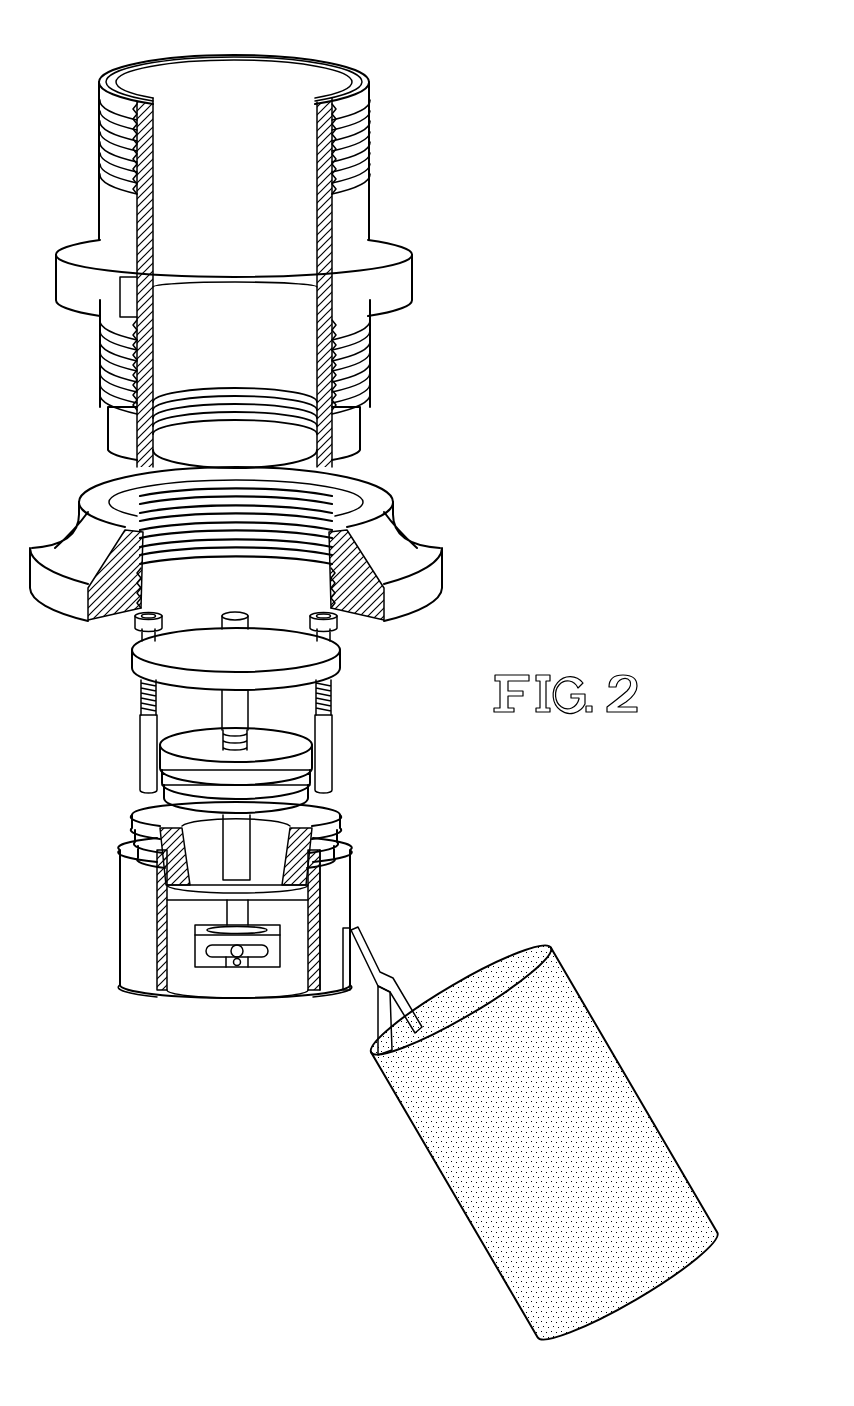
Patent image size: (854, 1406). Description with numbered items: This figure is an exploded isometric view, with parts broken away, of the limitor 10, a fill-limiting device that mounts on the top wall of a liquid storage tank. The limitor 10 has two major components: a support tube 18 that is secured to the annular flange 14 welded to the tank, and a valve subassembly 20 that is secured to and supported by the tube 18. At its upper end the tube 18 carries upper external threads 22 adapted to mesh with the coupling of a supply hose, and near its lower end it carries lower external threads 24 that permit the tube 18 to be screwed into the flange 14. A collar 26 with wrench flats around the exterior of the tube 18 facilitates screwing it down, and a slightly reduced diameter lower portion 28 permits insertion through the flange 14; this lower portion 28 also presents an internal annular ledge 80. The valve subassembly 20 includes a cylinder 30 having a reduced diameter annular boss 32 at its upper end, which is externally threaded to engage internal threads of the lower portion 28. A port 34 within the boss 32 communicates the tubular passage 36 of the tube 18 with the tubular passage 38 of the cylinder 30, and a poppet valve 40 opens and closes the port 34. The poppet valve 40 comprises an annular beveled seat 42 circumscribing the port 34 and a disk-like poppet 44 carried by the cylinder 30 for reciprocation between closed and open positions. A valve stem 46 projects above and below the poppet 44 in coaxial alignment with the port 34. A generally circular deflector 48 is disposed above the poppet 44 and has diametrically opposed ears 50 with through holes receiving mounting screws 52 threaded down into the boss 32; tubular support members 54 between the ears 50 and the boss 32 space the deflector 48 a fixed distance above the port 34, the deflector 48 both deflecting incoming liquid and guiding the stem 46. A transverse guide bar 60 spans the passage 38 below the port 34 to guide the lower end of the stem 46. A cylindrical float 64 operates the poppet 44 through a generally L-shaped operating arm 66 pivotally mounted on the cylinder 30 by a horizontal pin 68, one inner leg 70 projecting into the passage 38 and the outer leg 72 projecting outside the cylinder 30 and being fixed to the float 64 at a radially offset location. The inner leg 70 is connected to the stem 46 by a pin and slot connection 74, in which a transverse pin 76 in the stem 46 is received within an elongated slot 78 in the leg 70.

The limitor 10 is at (487, 338).
The annular flange 14 is at (430, 578).
The support tube 18 is at (274, 236).
The valve subassembly 20 is at (263, 701).
The upper external threads 22 is at (372, 112).
The lower external threads 24 is at (372, 356).
The collar 26 is at (400, 280).
The reduced diameter lower portion 28 is at (357, 428).
The cylinder 30 is at (238, 932).
The annular boss 32 is at (295, 850).
The port 34 is at (280, 830).
The tubular passage 36 is at (150, 82).
The tubular passage 38 is at (178, 968).
The poppet valve 40 is at (223, 842).
The beveled seat 42 is at (135, 810).
The poppet 44 is at (196, 742).
The valve stem 46 is at (240, 636).
The deflector 48 is at (196, 640).
The ears 50 is at (137, 662).
The mounting screws 52 is at (142, 702).
The tubular support members 54 is at (142, 742).
The transverse guide bar 60 is at (180, 893).
The float 64 is at (598, 1040).
The operating arm 66 is at (380, 997).
The pin 68 is at (345, 985).
The inner leg 70 is at (296, 958).
The outer leg 72 is at (388, 1025).
The pin and slot connection 74 is at (222, 987).
The transverse pin 76 is at (236, 968).
The elongated slot 78 is at (260, 958).
The internal annular ledge 80 is at (160, 414).